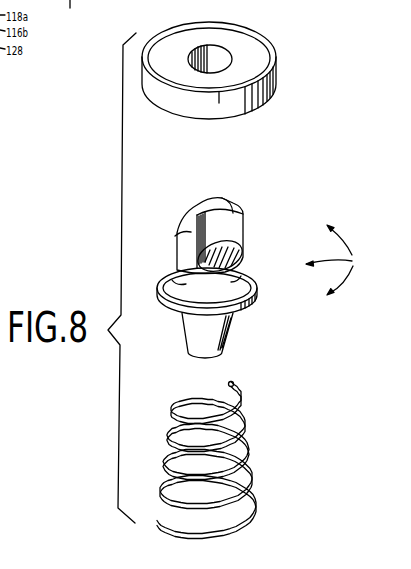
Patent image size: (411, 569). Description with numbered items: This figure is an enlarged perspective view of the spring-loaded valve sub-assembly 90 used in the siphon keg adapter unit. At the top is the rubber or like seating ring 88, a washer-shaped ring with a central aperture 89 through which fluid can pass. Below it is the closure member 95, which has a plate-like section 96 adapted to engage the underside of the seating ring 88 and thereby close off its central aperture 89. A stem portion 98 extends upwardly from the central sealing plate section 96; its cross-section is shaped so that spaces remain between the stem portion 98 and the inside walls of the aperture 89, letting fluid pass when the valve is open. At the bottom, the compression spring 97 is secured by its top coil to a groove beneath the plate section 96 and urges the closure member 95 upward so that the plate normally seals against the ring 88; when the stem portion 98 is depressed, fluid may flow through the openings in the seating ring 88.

The seating ring 88 is at (268, 86).
The central aperture 89 is at (228, 56).
The spring-loaded valve sub-assembly 90 is at (337, 260).
The closure member 95 is at (250, 277).
The plate-like section 96 is at (246, 311).
The compression spring 97 is at (247, 471).
The stem portion 98 is at (240, 218).